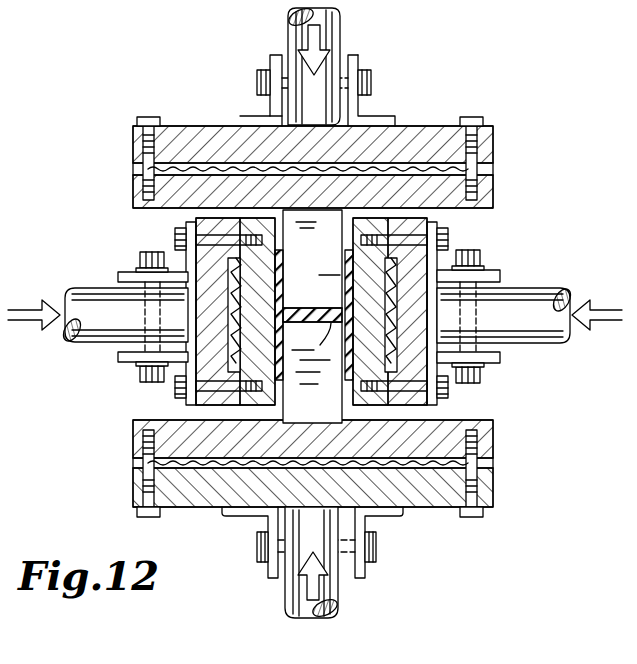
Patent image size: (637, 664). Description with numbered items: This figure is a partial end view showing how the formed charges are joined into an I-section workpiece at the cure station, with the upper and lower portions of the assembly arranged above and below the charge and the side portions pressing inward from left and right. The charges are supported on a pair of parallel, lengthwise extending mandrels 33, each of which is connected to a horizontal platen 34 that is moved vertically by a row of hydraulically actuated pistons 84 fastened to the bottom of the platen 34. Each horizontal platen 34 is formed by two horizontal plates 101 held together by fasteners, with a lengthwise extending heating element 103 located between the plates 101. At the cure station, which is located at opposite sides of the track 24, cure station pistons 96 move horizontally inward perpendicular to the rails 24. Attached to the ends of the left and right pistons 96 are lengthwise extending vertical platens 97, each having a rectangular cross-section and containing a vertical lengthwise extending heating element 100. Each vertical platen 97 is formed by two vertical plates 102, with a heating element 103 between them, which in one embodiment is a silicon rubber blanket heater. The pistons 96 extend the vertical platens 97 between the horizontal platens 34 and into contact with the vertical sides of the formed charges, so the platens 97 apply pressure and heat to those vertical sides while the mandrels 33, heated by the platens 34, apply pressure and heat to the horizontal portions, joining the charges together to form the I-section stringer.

The rails 24 is at (315, 312).
The mandrels 33 is at (385, 178).
The horizontal platen 34 is at (494, 145).
The hydraulically actuated pistons 84 is at (341, 30).
The cure station pistons 96 is at (86, 300).
The vertical platens 97 is at (210, 219).
The heating element 100 is at (238, 338).
The horizontal plates 101 is at (197, 190).
The vertical plates 102 is at (440, 392).
The heating element 103 is at (398, 166).